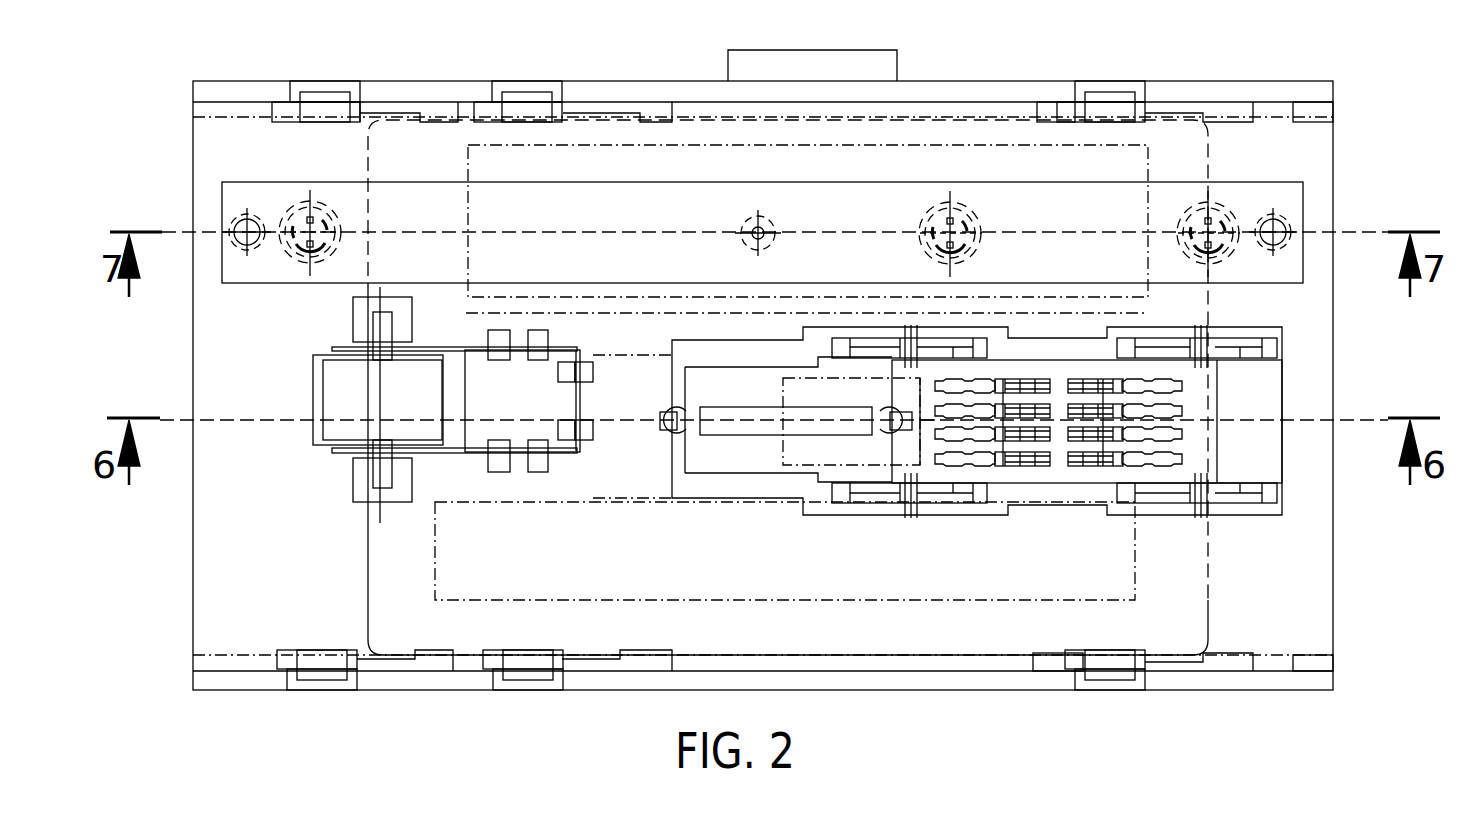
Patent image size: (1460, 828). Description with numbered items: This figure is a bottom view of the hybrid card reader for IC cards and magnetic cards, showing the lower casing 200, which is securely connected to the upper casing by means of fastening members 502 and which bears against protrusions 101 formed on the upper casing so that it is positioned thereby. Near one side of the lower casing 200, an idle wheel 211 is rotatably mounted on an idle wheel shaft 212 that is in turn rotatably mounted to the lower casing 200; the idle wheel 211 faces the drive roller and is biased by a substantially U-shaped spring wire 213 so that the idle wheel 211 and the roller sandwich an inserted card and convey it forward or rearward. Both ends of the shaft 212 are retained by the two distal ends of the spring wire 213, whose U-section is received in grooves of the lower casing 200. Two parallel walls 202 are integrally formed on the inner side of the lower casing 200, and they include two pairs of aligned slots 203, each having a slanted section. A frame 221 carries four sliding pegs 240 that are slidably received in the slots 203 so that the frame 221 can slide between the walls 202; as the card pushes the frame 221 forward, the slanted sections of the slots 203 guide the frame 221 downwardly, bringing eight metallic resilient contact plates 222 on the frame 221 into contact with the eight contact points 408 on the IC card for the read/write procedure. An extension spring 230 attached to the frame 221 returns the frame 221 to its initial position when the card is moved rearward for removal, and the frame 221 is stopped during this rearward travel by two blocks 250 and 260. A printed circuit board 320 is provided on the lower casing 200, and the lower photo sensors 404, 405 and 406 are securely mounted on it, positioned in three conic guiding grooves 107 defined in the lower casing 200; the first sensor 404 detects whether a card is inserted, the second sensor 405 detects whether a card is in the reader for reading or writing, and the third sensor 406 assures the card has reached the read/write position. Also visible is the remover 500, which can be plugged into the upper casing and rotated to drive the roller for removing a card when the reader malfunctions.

The protrusions 101 is at (1325, 108).
The conic guiding grooves 107 is at (281, 218).
The lower casing 200 is at (1328, 571).
The parallel walls 202 is at (1283, 507).
The slots 203 is at (877, 345).
The idle wheel 211 is at (328, 385).
The idle wheel shaft 212 is at (373, 478).
The spring wire 213 is at (437, 347).
The frame 221 is at (1213, 398).
The metallic resilient contact plates 222 is at (1110, 467).
The spring 230 is at (725, 432).
The sliding pegs 240 is at (918, 345).
The block 250 is at (817, 478).
The block 260 is at (817, 360).
The printed circuit board 320 is at (1295, 205).
The photo sensor 404 is at (325, 190).
The photo sensor 405 is at (972, 212).
The photo sensor 406 is at (1237, 207).
The contact points 408 is at (1003, 470).
The remover 500 is at (895, 66).
The fastening members 502 is at (322, 92).